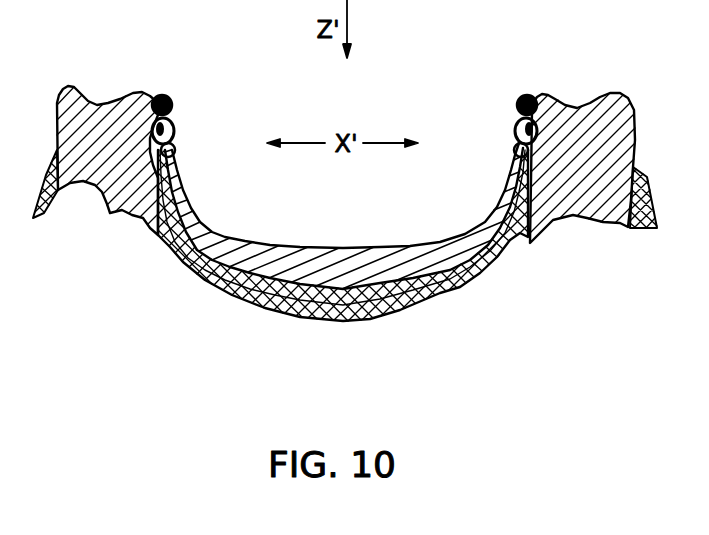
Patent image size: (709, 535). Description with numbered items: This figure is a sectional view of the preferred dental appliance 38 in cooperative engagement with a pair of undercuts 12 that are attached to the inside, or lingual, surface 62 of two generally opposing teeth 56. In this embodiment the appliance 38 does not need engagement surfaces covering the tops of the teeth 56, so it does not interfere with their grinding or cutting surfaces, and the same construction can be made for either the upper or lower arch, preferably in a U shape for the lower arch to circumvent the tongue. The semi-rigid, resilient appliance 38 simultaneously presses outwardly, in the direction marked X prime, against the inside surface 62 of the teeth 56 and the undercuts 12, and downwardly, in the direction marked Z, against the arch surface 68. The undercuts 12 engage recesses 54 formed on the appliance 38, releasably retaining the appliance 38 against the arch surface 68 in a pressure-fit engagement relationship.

The inside surface 62 is at (150, 97).
The teeth 56 is at (107, 212).
The undercuts 12 is at (168, 112).
The recesses 54 is at (175, 154).
The arch surface 68 is at (261, 274).
The dental appliance 38 is at (222, 238).